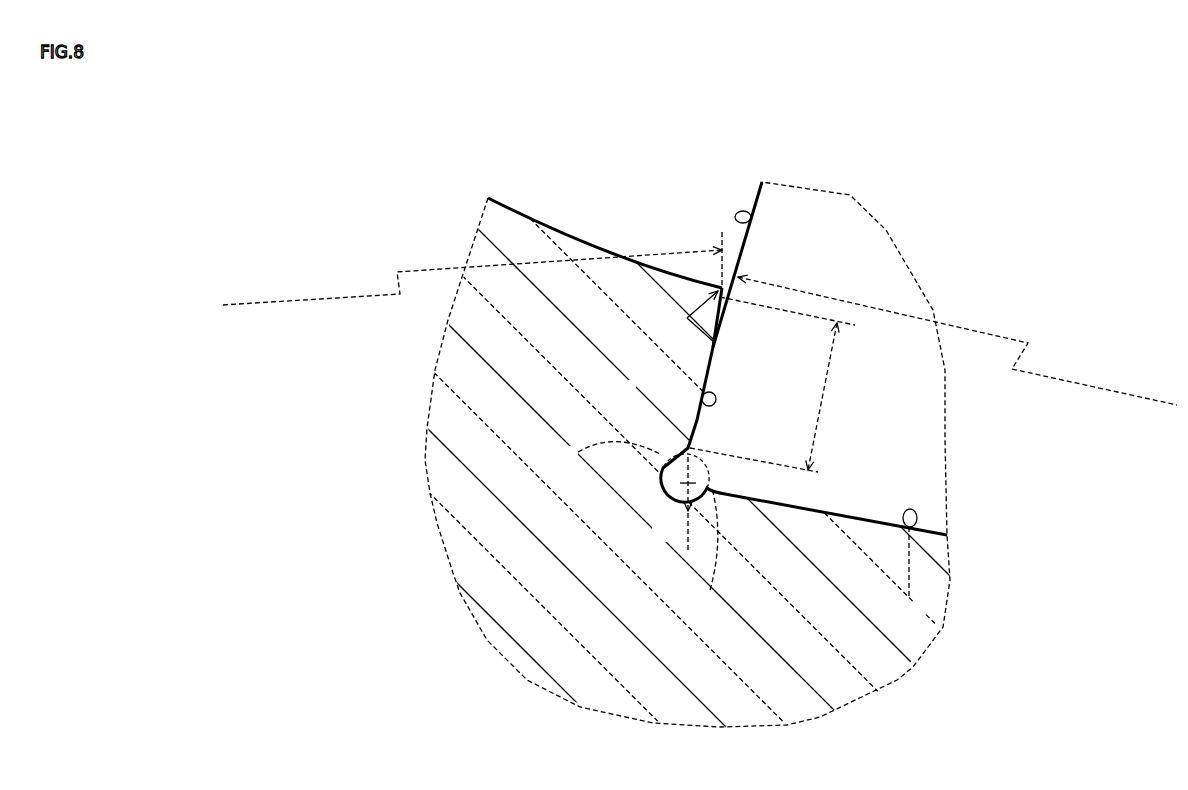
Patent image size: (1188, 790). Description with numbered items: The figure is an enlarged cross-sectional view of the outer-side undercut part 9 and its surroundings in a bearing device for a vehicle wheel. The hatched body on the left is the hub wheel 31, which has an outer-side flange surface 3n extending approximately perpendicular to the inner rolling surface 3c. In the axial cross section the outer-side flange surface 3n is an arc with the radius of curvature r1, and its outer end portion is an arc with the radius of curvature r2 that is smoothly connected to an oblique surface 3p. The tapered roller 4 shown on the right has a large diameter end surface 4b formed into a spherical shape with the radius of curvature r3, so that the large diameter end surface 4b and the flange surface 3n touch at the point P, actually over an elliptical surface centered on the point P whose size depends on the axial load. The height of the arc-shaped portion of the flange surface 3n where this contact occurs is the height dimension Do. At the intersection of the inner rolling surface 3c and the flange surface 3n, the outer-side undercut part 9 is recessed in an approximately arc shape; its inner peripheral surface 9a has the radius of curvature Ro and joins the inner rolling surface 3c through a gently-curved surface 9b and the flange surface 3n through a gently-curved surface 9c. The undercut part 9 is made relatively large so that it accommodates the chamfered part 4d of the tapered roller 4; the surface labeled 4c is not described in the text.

The hub wheel 31 is at (432, 516).
The oblique surface 3p is at (527, 215).
The outer-side flange surface 3n is at (699, 402).
The inner rolling surface 3c is at (940, 628).
The tapered roller 4 is at (870, 487).
The large diameter end surface 4b is at (749, 222).
The bottom surface of member 4c is at (905, 408).
The chamfered part 4d is at (663, 470).
The outer-side undercut part 9 is at (614, 547).
The inner peripheral surface 9a is at (661, 500).
The gently-curved surface 9b is at (702, 551).
The gently-curved surface 9c is at (608, 454).
The contact point P is at (715, 378).
The radius of curvature Ro is at (676, 505).
The height dimension Do is at (832, 396).
The radius of curvature r1 is at (472, 268).
The radius of curvature r2 is at (693, 317).
The radius of curvature r3 is at (957, 340).